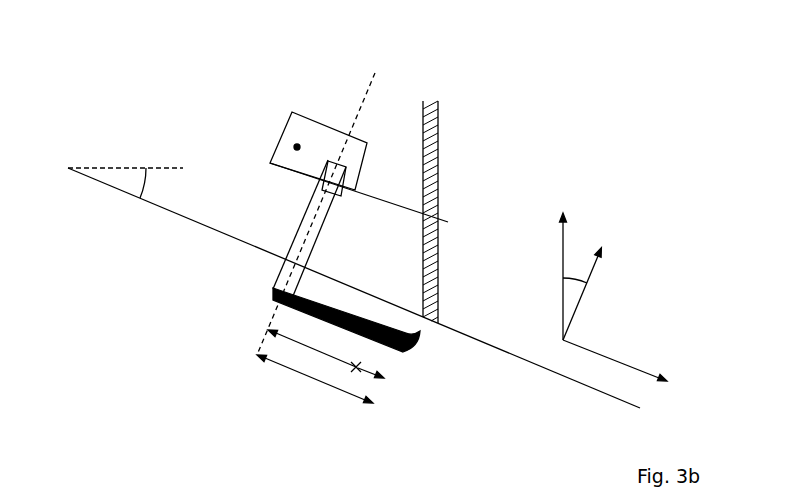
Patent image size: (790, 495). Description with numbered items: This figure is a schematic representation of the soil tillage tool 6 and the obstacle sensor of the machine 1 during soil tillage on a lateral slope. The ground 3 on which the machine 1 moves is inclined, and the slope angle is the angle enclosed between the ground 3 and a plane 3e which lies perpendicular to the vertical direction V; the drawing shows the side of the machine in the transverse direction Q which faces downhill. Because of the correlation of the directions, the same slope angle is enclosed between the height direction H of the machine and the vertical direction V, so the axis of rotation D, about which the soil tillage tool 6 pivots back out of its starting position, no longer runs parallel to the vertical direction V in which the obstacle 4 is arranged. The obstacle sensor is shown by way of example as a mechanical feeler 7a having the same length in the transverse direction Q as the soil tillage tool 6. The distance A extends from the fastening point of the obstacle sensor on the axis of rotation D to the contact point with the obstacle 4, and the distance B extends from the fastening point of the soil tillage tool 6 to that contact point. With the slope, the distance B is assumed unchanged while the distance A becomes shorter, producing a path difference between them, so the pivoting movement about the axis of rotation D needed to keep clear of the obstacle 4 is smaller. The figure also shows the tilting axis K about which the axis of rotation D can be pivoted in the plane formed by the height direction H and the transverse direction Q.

The machine 1 is at (302, 94).
The ground 3 is at (530, 363).
The plane 3e is at (147, 167).
The obstacle 4 is at (440, 122).
The soil tillage tool 6 is at (272, 291).
The mechanical feeler 7a is at (393, 197).
The tilting axis K is at (294, 147).
The axis of rotation D is at (362, 102).
The vertical direction V is at (560, 253).
The height direction H is at (582, 283).
The transverse direction Q is at (603, 355).
The distance A is at (337, 352).
The distance B is at (308, 377).